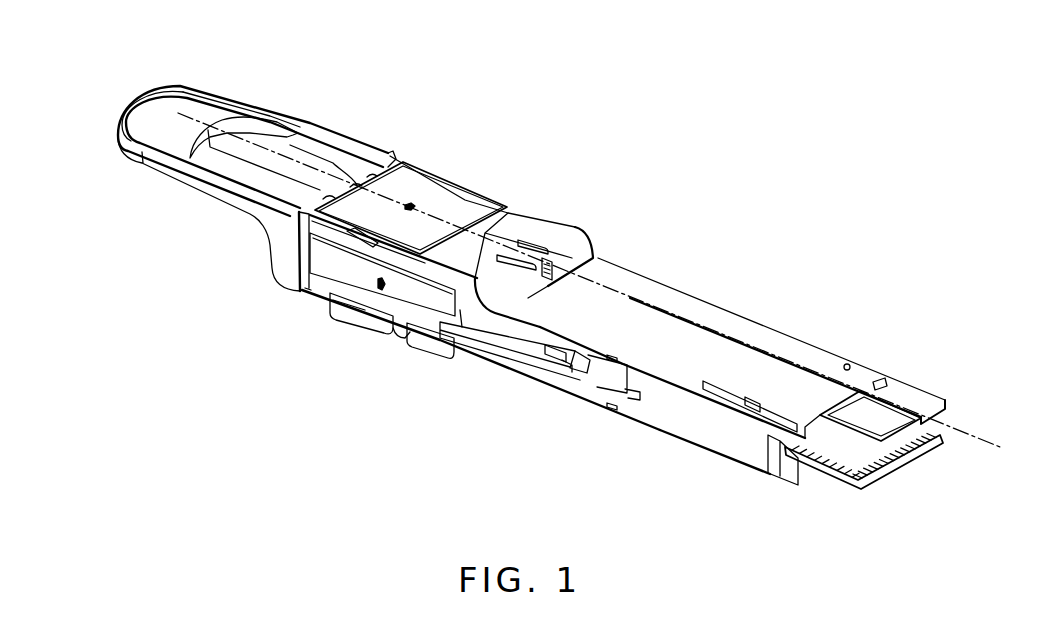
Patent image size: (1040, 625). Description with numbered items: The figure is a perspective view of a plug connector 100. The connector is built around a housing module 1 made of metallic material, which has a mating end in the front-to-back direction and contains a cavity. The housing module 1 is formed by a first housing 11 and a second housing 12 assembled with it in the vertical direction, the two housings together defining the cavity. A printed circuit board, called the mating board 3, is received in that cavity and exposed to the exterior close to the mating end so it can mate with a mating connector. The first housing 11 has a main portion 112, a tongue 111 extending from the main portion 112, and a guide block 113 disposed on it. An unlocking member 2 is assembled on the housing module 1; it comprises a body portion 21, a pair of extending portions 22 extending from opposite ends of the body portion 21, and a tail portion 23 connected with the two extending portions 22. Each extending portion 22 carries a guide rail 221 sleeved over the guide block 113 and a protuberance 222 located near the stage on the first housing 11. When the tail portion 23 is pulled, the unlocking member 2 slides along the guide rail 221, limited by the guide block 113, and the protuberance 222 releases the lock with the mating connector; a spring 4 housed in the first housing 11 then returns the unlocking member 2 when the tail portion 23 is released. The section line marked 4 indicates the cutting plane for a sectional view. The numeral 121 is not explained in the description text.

The plug connector 100 is at (634, 204).
The housing module 1 is at (632, 288).
The first housing 11 is at (740, 337).
The tongue 111 is at (388, 335).
The main portion 112 is at (700, 305).
The guide block 113 is at (562, 365).
The second housing 12 is at (733, 458).
The protrusion of lower housing 121 is at (402, 340).
The unlocking member 2 is at (503, 236).
The body portion 21 is at (528, 226).
The extending portion 22 is at (468, 312).
The guide rail 221 is at (577, 377).
The protuberance 222 is at (612, 412).
The tail portion 23 is at (245, 107).
The mating board 3 is at (908, 457).
The spring 4 is at (137, 102).